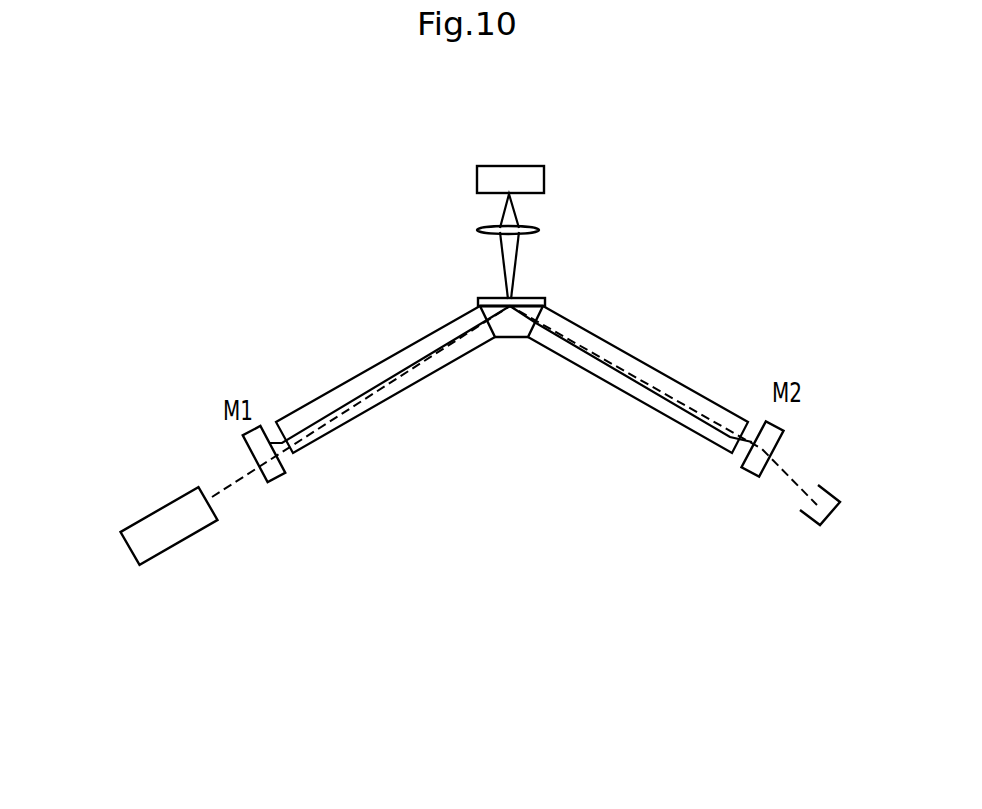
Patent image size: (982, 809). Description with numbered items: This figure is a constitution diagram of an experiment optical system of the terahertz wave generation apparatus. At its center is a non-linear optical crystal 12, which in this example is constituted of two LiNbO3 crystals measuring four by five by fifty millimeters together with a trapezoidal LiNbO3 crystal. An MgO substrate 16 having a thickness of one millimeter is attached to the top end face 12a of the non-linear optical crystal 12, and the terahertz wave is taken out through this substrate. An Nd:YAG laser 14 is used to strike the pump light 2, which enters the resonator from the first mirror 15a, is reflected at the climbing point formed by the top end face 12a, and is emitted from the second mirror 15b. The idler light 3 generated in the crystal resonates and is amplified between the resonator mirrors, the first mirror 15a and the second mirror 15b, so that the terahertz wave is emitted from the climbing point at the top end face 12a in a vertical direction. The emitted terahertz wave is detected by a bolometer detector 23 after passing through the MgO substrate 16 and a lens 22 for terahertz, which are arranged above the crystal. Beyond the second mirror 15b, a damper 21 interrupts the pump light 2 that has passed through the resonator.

The pump light 2 is at (243, 480).
The idler light 3 is at (352, 397).
The non-linear optical crystal 12 is at (577, 362).
The top end face 12a is at (486, 294).
The Nd:YAG laser 14 is at (158, 542).
The mirror (M1) 15a is at (280, 473).
The mirror (M2) 15b is at (747, 470).
The MgO substrate 16 is at (535, 300).
The damper 21 is at (822, 525).
The lens for terahertz 22 is at (488, 227).
The bolometer detector 23 is at (535, 178).